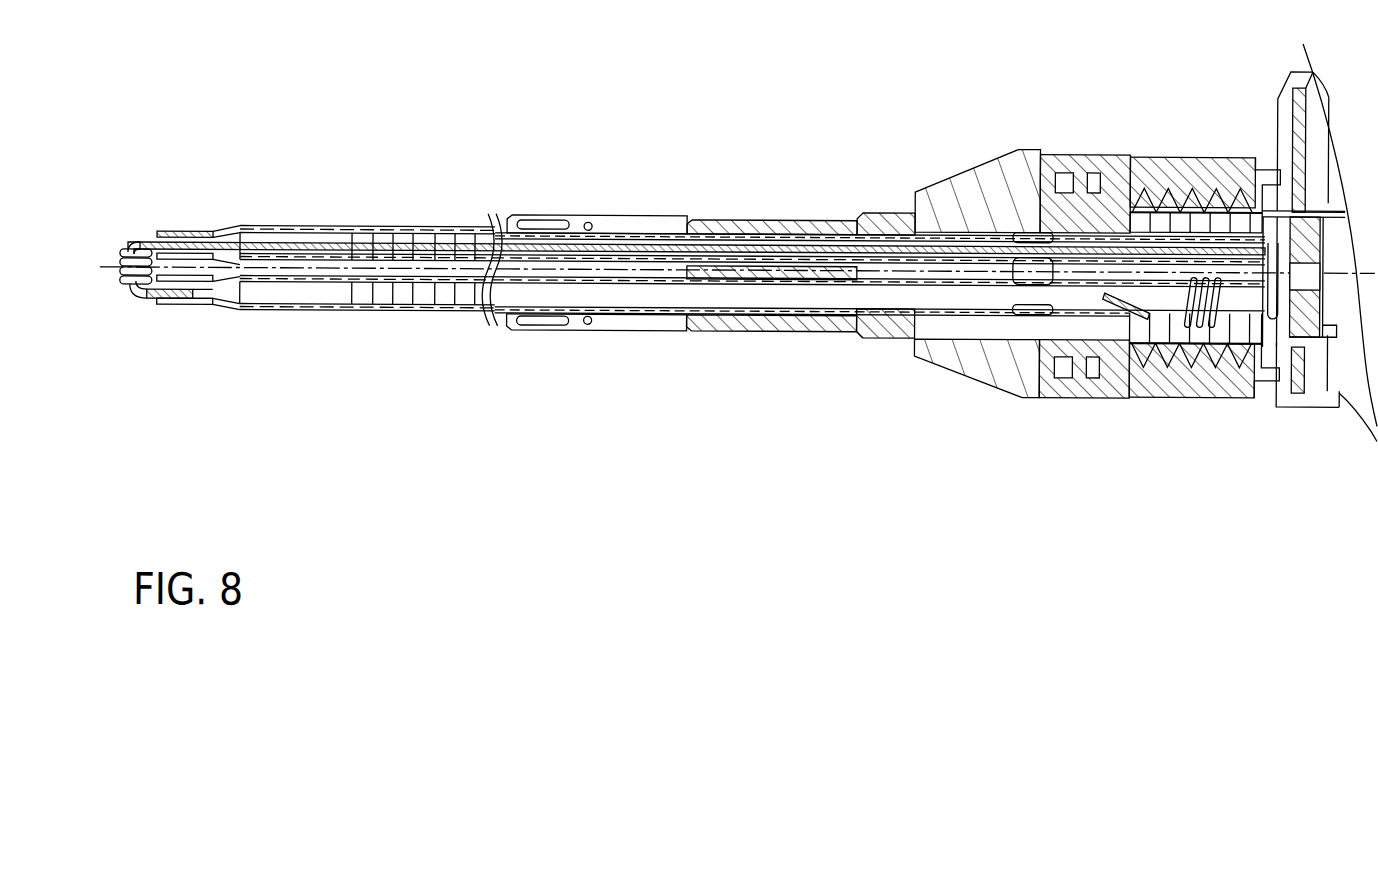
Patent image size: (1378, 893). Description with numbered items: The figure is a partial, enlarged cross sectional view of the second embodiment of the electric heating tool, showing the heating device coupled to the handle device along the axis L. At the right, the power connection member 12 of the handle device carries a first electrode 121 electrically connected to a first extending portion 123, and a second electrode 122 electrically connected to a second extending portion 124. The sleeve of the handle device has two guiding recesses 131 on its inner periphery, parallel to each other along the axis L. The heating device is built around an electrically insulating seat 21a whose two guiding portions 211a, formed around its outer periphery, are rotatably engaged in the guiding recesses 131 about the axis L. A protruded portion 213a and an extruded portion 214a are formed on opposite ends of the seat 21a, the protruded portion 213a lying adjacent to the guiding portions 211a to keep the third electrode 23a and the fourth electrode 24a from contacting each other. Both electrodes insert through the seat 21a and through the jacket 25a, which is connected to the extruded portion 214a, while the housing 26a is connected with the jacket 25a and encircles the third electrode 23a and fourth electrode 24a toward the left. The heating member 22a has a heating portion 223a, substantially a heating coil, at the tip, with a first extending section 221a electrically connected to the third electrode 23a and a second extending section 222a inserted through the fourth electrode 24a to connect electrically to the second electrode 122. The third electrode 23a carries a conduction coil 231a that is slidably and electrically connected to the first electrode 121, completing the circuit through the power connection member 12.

The power connection member 12 is at (1239, 474).
The first electrode 121 is at (1243, 330).
The second electrode 122 is at (1276, 365).
The first extending portion 123 is at (1292, 166).
The second extending portion 124 is at (1318, 375).
The guiding recess 131 is at (1078, 395).
The seat 21a is at (958, 186).
The guiding portion 211a is at (1062, 172).
The protruded portion 213a is at (1170, 190).
The extruded portion 214a is at (885, 209).
The heating member 22a is at (134, 210).
The first extending section 221a is at (190, 298).
The second extending section 222a is at (198, 238).
The heating portion 223a is at (135, 290).
The third electrode 23a is at (300, 309).
The conduction coil 231a is at (1195, 350).
The fourth electrode 24a is at (309, 225).
The jacket 25a is at (740, 217).
The housing 26a is at (636, 213).
The axis L is at (108, 282).